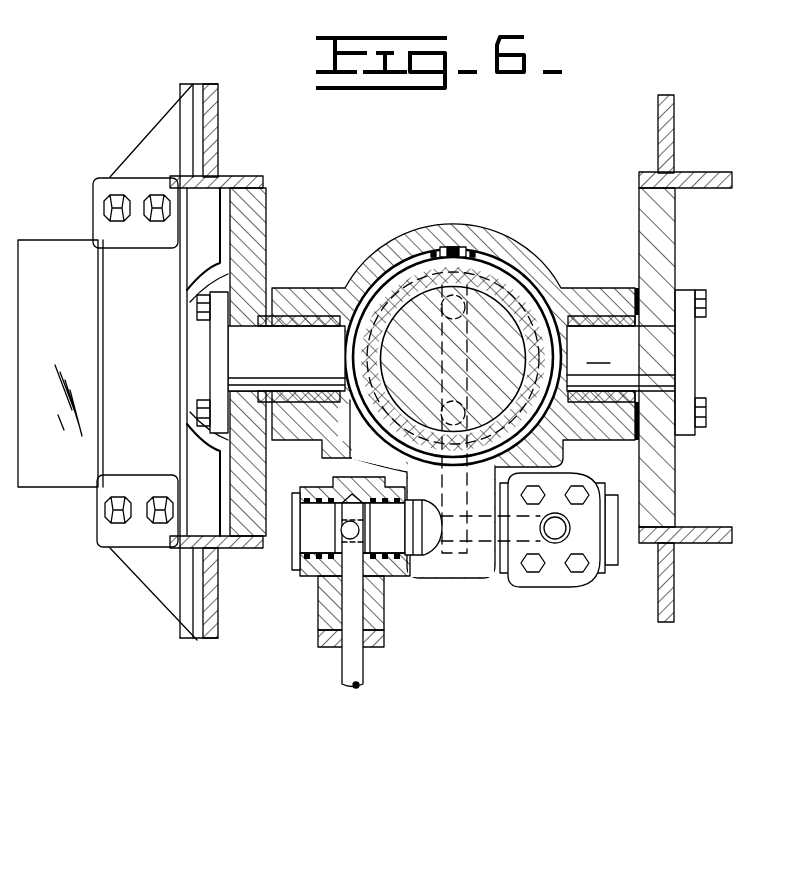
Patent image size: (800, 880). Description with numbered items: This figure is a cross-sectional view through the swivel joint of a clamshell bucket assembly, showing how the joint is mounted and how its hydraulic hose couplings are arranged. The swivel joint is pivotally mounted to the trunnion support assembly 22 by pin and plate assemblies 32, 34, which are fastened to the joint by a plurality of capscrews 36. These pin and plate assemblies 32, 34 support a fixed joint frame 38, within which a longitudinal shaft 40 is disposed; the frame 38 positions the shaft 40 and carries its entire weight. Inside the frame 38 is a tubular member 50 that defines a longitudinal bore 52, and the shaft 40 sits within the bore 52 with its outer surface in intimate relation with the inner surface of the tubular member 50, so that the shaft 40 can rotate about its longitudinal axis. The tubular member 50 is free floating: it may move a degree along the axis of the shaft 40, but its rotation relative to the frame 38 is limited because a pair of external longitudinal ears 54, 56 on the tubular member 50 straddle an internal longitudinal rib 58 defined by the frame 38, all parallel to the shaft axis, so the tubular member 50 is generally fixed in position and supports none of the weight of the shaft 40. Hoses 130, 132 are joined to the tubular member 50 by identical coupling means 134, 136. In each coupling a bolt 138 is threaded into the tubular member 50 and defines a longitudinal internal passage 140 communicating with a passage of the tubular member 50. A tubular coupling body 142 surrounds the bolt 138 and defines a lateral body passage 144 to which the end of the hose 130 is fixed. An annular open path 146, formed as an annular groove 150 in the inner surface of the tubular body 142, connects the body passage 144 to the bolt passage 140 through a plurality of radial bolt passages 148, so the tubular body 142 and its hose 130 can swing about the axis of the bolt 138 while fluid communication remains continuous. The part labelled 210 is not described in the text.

The trunnion support assembly 22 is at (690, 575).
The pin and plate assembly 32 is at (272, 359).
The pin and plate assembly 34 is at (635, 363).
The capscrews 36 is at (204, 399).
The fixed joint frame 38 is at (381, 252).
The longitudinal shaft 40 is at (388, 353).
The tubular member 50 is at (500, 262).
The longitudinal bore 52 is at (521, 278).
The external longitudinal ear 54 is at (505, 255).
The external longitudinal ear 56 is at (427, 250).
The internal longitudinal rib 58 is at (453, 248).
The hose 130 is at (362, 669).
The hose 132 is at (593, 568).
The coupling means 134 is at (314, 603).
The coupling means 136 is at (512, 572).
The bolt 138 is at (392, 560).
The longitudinal internal passage 140 is at (384, 560).
The tubular coupling body 142 is at (342, 487).
The lateral body passage 144 is at (334, 642).
The annular open path 146 is at (348, 492).
The radial bolt passages 148 is at (338, 533).
The annular groove 150 is at (320, 586).
The motor housing 210 is at (76, 348).